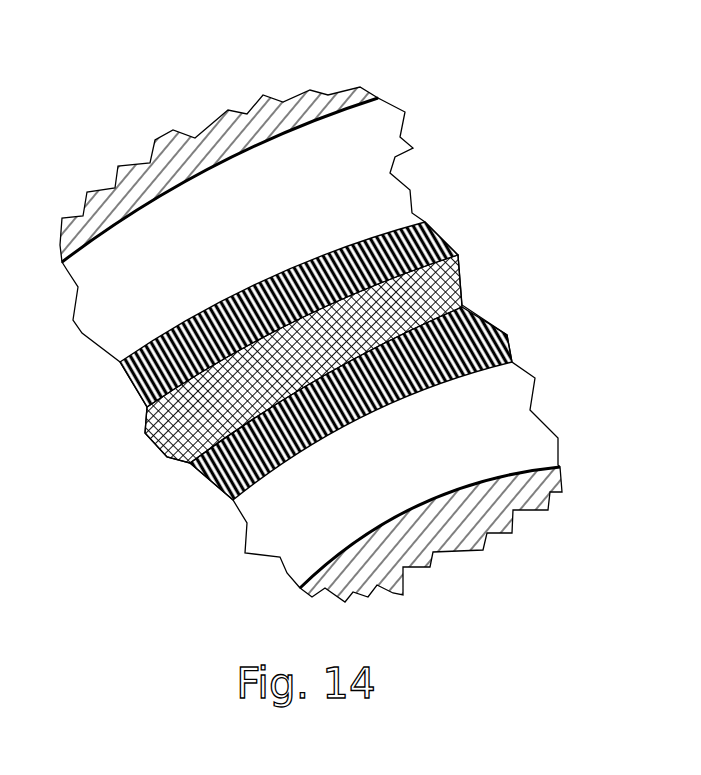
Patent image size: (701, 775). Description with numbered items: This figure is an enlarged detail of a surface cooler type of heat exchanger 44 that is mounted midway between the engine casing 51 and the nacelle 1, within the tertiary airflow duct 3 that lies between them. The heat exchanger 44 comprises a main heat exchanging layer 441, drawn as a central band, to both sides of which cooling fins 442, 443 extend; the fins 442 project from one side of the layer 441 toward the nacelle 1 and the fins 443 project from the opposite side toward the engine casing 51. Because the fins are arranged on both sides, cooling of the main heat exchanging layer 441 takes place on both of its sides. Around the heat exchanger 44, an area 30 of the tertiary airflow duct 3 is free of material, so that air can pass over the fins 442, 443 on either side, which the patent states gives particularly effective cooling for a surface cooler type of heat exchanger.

The nacelle 1 is at (221, 138).
The tertiary airflow duct 3 is at (30, 282).
The area of the tertiary airflow duct 30 is at (403, 143).
The surface cooler type of heat exchanger 44 is at (350, 340).
The main heat exchanging layer 441 is at (467, 289).
The cooling fins 442 is at (308, 257).
The cooling fins 443 is at (383, 402).
The engine casing 51 is at (457, 537).